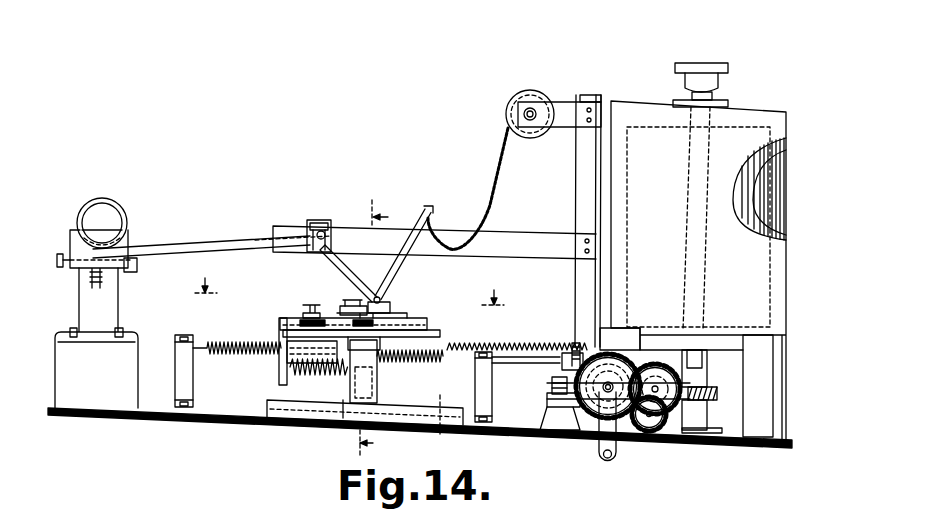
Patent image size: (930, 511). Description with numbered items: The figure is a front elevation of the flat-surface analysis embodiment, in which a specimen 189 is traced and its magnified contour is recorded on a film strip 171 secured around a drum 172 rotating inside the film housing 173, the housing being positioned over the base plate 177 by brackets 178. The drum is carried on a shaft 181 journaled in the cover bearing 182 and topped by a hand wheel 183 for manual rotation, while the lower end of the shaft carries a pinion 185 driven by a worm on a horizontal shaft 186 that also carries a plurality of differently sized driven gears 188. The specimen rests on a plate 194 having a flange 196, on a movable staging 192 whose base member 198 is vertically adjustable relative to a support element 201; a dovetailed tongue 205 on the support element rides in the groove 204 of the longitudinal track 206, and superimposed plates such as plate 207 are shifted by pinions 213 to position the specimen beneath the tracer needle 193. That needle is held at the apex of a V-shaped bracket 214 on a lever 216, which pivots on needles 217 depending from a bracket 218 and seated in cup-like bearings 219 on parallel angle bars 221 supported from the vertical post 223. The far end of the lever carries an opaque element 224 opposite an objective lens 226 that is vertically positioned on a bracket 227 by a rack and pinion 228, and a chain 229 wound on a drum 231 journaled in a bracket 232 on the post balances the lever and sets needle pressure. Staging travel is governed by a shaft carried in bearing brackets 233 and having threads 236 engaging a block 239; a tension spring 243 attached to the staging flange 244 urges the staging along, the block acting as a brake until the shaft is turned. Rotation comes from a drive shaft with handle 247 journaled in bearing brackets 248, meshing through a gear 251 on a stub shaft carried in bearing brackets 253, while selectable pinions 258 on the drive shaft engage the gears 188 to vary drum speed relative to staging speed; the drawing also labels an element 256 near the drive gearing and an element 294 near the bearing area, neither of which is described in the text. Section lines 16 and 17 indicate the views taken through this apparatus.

The section line 16- 16 is at (352, 289).
The section line 17- 17 is at (381, 329).
The film strip 171 is at (752, 153).
The drum 172 is at (755, 210).
The film housing 173 is at (752, 114).
The base plate 177 is at (150, 416).
The brackets 178 is at (772, 396).
The shaft 181 is at (698, 93).
The cover bearing 182 is at (720, 102).
The hand wheel 183 is at (716, 65).
The pinion 185 is at (707, 388).
The shaft 186 is at (657, 372).
The driven gears 188 is at (703, 408).
The specimen 189 is at (388, 309).
The movable staging 192 is at (431, 324).
The needle 193 is at (383, 291).
The plate 194 is at (344, 300).
The flange 196 is at (352, 308).
The base member 198 is at (440, 333).
The support element 201 is at (373, 392).
The groove 204 is at (440, 426).
The dovetailed tongue 205 is at (343, 407).
The track 206 is at (420, 412).
The plate 207 is at (386, 343).
The pinions 213 is at (303, 312).
The V-shaped bracket 214 is at (433, 212).
The lever 216 is at (192, 245).
The needles 217 is at (325, 233).
The bracket 218 is at (318, 220).
The cup-like bearings 219 is at (318, 252).
The members 221 is at (278, 226).
The post 223 is at (580, 183).
The opaque element 224 is at (123, 229).
The objective lens 226 is at (120, 198).
The bracket 227 is at (104, 312).
The rack and pinion 228 is at (90, 268).
The chain 229 is at (503, 150).
The drum 231 is at (522, 90).
The bracket 232 is at (567, 100).
The bearing brackets 233 is at (180, 389).
The threads 236 is at (237, 355).
The block 239 is at (307, 360).
The tension spring 243 is at (520, 343).
The flange 244 is at (280, 371).
The handle 247 is at (612, 458).
The bearing brackets 248 is at (588, 428).
The gear 251 is at (553, 396).
The bearing brackets 253 is at (553, 422).
The pawl 256 is at (577, 347).
The pinions 258 is at (612, 354).
The bearing 294 is at (506, 363).